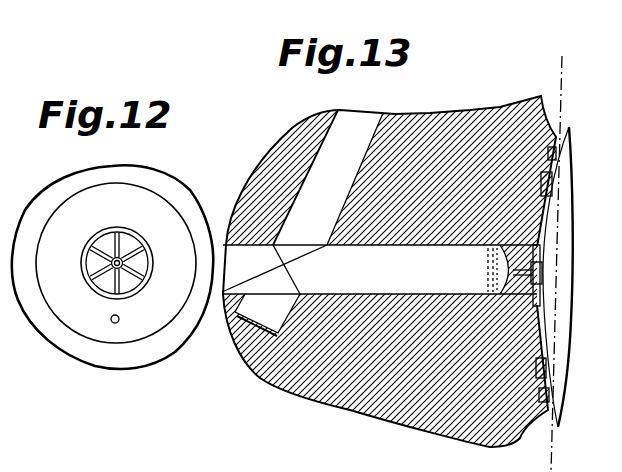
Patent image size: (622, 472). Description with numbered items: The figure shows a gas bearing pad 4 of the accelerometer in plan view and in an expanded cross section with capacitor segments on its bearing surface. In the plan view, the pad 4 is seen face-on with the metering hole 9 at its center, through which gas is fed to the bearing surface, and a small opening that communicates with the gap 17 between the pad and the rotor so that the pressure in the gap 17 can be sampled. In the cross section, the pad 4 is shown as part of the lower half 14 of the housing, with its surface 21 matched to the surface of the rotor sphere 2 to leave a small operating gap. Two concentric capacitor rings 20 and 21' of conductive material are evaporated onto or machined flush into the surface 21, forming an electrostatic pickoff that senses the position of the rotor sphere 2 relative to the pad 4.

In FIG. 12, the gas bearing pad 4 is at (167, 200).
In FIG. 13, the gas bearing pad 4 is at (545, 135).
In FIG. 12, the metering hole 9 is at (122, 270).
In FIG. 12, the gap 17 is at (119, 318).
In FIG. 13, the rotor sphere 2 is at (565, 283).
In FIG. 13, the lower half 14 is at (583, 70).
In FIG. 13, the capacitor ring 20 is at (551, 186).
In FIG. 13, the surface 21 is at (574, 310).
In FIG. 13, the capacitor ring 21' is at (583, 155).